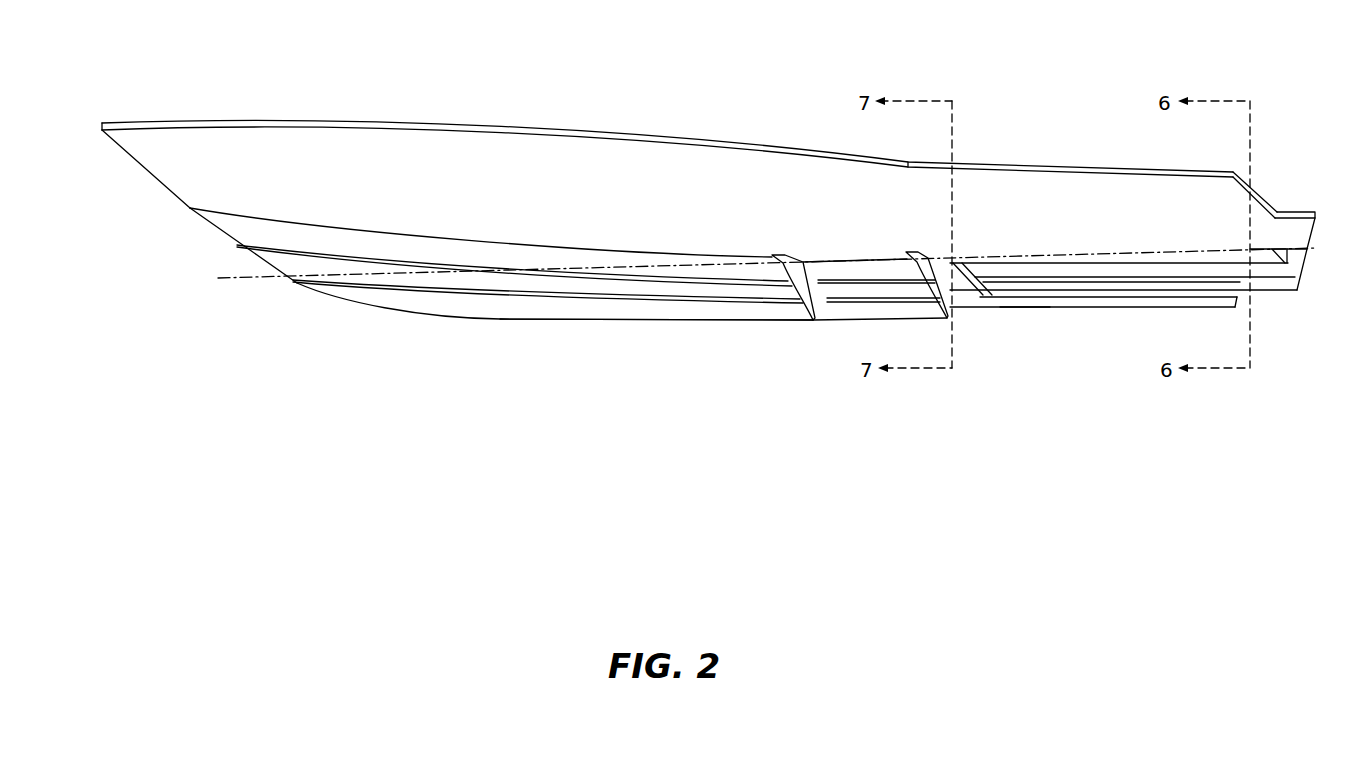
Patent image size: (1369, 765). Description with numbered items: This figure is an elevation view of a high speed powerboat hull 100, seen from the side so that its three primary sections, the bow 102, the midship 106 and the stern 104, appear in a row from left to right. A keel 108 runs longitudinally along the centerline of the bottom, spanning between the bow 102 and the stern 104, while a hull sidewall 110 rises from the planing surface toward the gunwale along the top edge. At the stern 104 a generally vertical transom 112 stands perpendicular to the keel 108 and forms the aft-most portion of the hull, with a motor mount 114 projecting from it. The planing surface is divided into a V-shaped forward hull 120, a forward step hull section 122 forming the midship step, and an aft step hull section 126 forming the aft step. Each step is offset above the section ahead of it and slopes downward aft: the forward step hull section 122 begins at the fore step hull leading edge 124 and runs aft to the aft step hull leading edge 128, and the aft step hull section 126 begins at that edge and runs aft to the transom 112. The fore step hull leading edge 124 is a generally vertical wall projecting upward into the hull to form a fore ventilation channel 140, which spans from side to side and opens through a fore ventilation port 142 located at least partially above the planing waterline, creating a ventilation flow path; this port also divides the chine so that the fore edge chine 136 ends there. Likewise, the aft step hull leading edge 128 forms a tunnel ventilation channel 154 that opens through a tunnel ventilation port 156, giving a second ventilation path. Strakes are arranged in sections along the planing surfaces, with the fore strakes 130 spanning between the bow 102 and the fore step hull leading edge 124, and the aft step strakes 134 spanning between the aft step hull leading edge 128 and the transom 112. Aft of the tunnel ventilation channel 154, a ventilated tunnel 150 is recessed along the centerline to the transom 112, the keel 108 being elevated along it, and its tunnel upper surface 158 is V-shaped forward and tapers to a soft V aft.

The powerboat hull 100 is at (337, 467).
The bow 102 is at (139, 184).
The stern 104 is at (1270, 124).
The midship 106 is at (745, 118).
The keel 108 is at (349, 303).
The hull sidewall 110 is at (355, 148).
The transom 112 is at (1243, 275).
The motor mount 114 is at (1315, 233).
The forward hull 120 is at (680, 312).
The forward step hull section 122 is at (858, 313).
The fore step hull leading edge 124 is at (813, 320).
The aft step hull section 126 is at (1057, 303).
The aft step hull leading edge 128 is at (950, 318).
The fore strakes 130 is at (572, 272).
The aft step strakes 134 is at (1143, 278).
The fore edge chine 136 is at (650, 262).
The fore ventilation channel 140 is at (805, 280).
The fore ventilation port 142 is at (790, 258).
The ventilated tunnel 150 is at (1078, 302).
The tunnel ventilation channel 154 is at (964, 280).
The tunnel ventilation port 156 is at (934, 254).
The tunnel upper surface 158 is at (1024, 322).